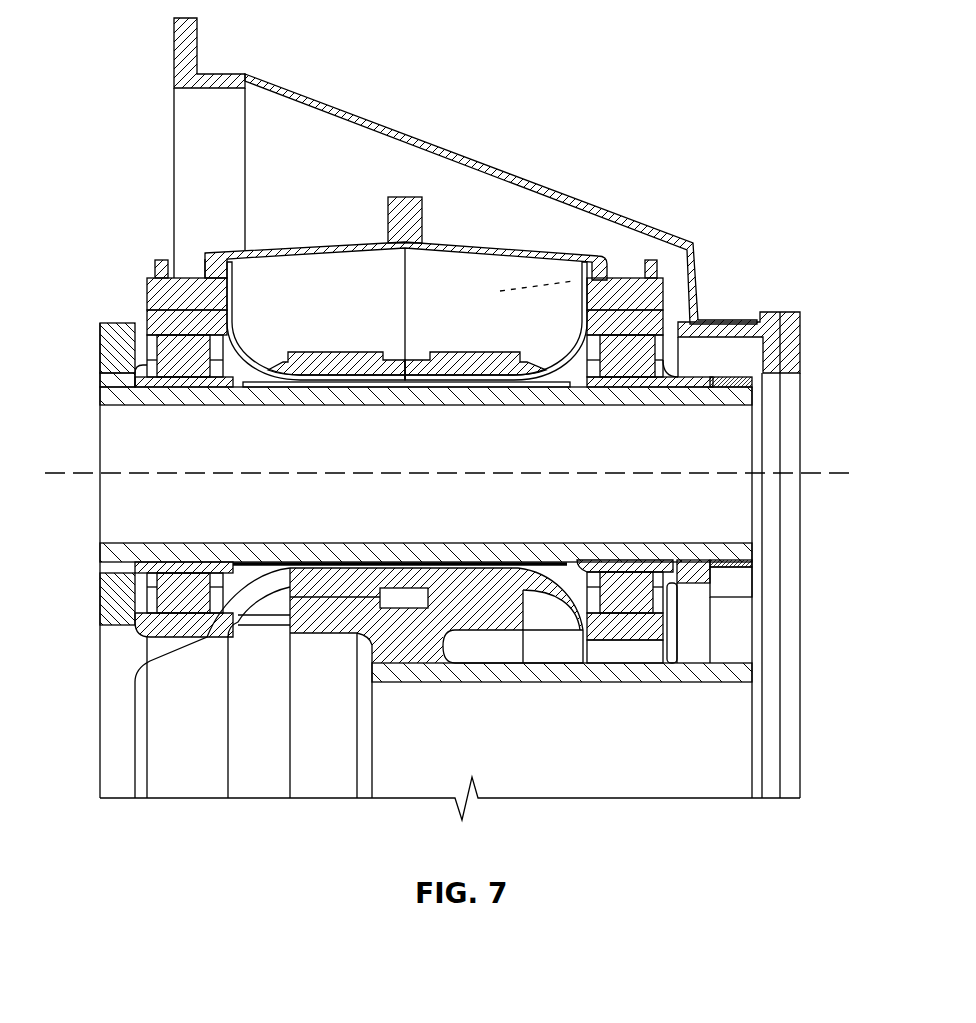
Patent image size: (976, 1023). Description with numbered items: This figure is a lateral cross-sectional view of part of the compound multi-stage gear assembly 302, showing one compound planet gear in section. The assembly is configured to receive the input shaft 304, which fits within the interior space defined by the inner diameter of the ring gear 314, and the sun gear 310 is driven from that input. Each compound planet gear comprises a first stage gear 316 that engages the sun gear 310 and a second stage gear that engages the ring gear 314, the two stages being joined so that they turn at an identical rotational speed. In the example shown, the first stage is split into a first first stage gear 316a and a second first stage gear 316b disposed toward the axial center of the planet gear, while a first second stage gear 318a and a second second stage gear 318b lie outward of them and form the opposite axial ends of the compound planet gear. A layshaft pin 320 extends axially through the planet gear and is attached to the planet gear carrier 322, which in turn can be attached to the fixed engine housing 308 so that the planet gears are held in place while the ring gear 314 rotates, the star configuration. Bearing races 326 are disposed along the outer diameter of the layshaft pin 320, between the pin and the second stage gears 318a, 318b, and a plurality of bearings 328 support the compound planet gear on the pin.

The gear assembly 302 is at (107, 278).
The input shaft 304 is at (683, 683).
The fixed engine housing 308 is at (466, 157).
The sun gear 310 is at (337, 613).
The ring gear 314 is at (330, 246).
The first stage gear 316 is at (353, 583).
The first first stage gear 316a is at (337, 351).
The second first stage gear 316b is at (475, 351).
The first second stage gear 318a is at (229, 312).
The second second stage gear 318b is at (588, 320).
The layshaft pin 320 is at (100, 389).
The planet gear carrier 322 is at (801, 321).
The bearing race 326 is at (223, 384).
The bearing 328 is at (175, 367).